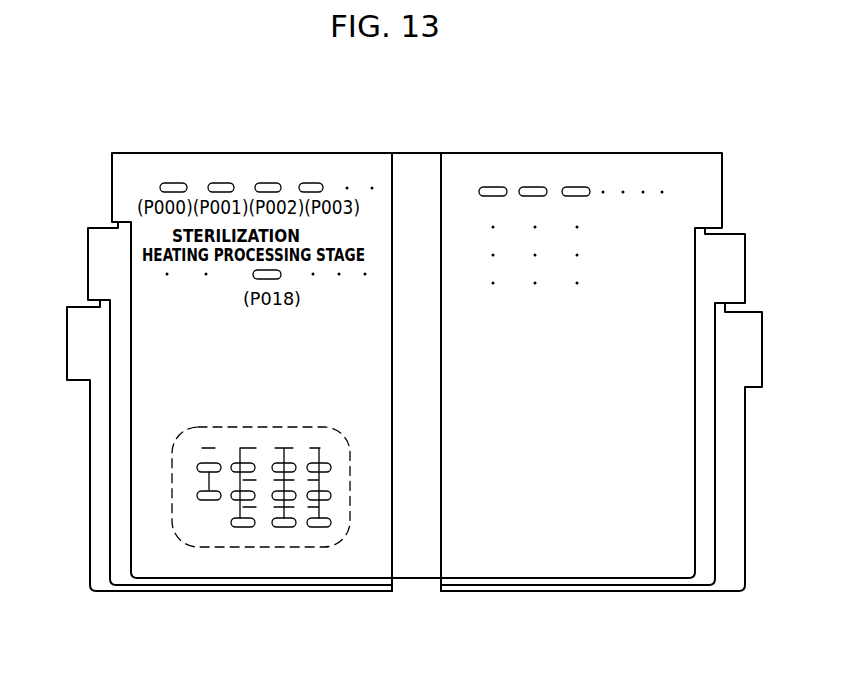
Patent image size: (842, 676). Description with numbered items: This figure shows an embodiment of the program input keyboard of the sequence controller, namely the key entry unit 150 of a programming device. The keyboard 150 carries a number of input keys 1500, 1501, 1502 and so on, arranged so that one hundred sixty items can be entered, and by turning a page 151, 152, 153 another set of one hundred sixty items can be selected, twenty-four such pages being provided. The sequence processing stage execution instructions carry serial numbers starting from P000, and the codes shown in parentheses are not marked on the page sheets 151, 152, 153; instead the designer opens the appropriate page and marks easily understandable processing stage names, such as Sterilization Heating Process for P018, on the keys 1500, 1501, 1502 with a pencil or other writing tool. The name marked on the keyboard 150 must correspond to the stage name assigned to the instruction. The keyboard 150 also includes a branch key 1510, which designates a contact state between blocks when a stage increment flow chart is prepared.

The key entry unit 150 is at (548, 153).
The page 151 is at (66, 349).
The page 152 is at (88, 262).
The page 153 is at (112, 187).
The input key 1500 is at (178, 182).
The input key 1501 is at (226, 182).
The input key 1502 is at (278, 182).
The branch key 1510 is at (271, 427).